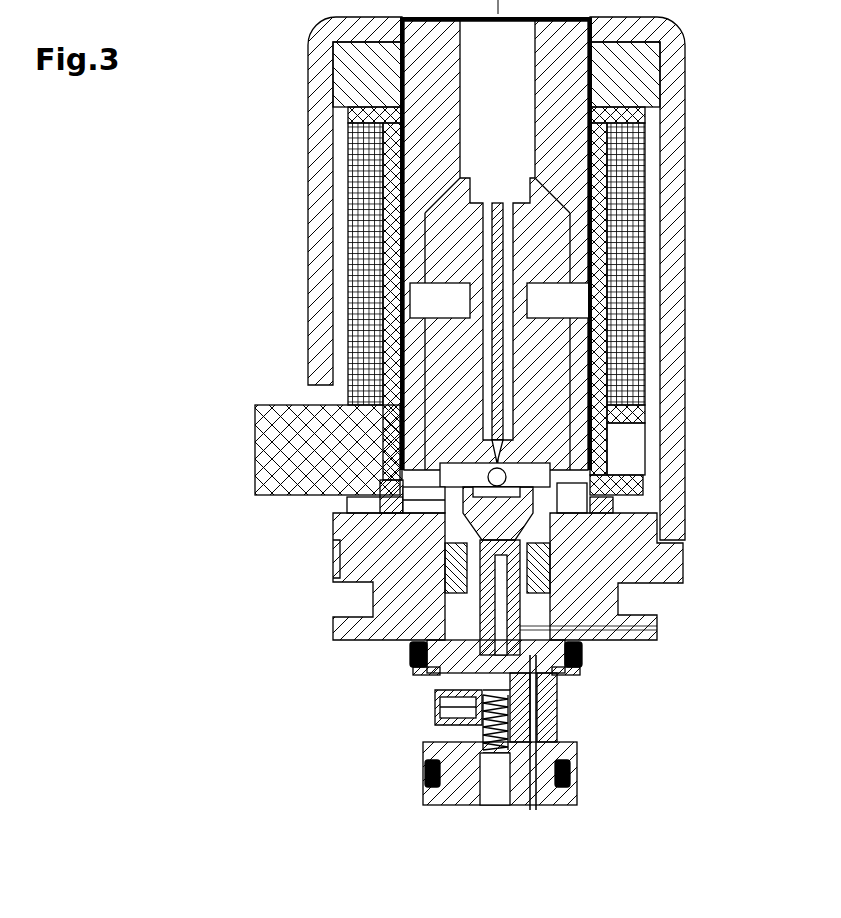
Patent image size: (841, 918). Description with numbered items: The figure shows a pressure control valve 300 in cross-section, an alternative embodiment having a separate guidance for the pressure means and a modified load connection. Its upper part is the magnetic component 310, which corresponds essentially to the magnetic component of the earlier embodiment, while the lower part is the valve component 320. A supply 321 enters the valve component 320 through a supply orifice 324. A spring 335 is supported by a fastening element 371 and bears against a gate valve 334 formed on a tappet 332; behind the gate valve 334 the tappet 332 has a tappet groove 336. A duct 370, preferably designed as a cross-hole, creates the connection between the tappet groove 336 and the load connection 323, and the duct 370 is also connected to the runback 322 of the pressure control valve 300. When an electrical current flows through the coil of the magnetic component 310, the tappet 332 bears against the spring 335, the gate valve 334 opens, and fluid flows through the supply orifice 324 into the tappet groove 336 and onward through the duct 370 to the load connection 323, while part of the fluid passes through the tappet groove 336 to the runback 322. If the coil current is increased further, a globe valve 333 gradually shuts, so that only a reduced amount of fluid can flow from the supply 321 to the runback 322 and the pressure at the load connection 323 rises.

The pressure control valve 300 is at (150, 222).
The magnetic component 310 is at (222, 315).
The valve component 320 is at (208, 576).
The supply 321 is at (447, 712).
The runback 322 is at (388, 503).
The load connection 323 is at (532, 807).
The supply orifice 324 is at (445, 708).
The tappet 332 is at (483, 597).
The globe valve 333 is at (530, 528).
The gate valve 334 is at (507, 690).
The spring 335 is at (513, 732).
The tappet groove 336 is at (513, 655).
The duct 370 is at (517, 628).
The fastening element 371 is at (497, 785).